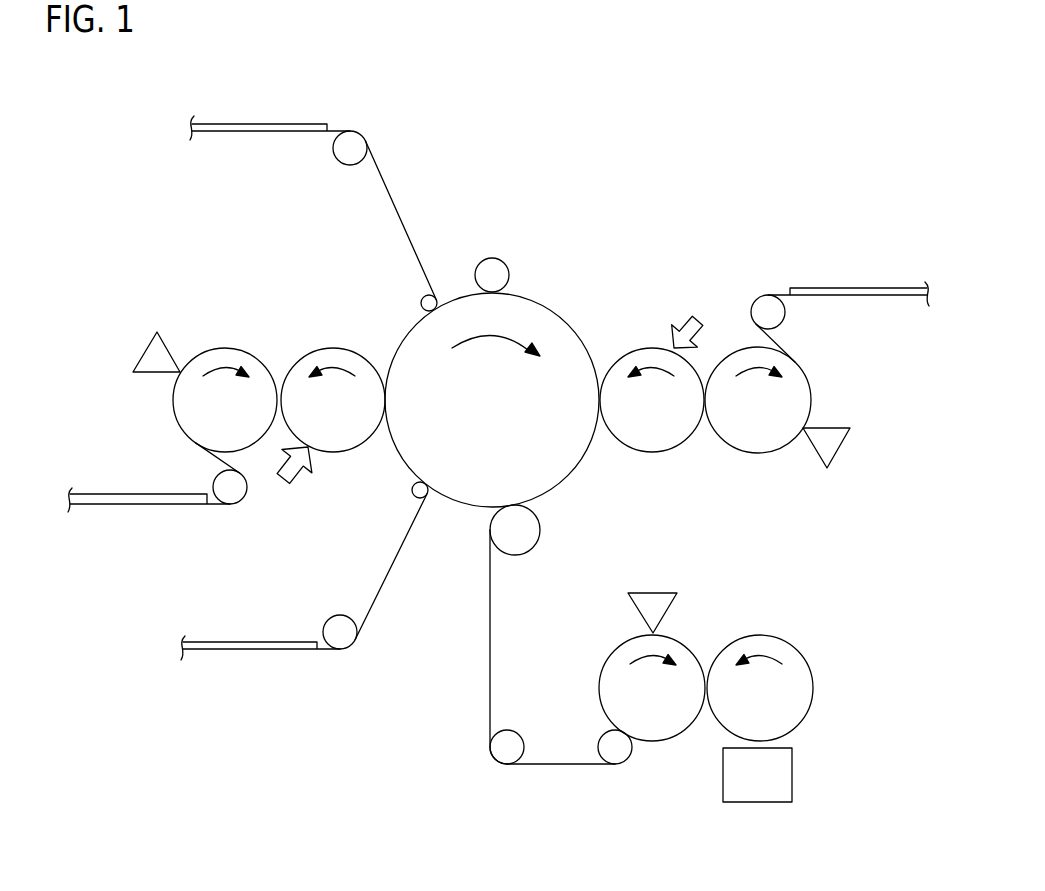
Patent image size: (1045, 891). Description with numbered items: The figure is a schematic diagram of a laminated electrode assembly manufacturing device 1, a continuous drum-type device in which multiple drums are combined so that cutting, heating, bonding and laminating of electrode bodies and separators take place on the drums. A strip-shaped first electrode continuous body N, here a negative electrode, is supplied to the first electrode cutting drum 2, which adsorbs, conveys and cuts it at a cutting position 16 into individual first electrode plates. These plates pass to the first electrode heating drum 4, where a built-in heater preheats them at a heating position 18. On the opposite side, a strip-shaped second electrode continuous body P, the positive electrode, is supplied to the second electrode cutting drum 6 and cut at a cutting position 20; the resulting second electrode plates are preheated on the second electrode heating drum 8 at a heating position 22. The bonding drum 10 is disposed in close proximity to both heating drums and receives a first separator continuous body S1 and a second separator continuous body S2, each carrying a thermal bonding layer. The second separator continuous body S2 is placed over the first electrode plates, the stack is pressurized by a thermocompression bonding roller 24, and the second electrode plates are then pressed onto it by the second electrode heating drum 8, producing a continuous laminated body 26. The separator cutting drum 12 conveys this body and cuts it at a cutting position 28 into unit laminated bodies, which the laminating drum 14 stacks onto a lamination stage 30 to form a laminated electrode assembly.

The laminated electrode assembly manufacturing device 1 is at (527, 868).
The first electrode cutting drum 2 is at (225, 348).
The first electrode heating drum 4 is at (333, 348).
The second electrode cutting drum 6 is at (758, 453).
The second electrode heating drum 8 is at (652, 452).
The bonding drum 10 is at (545, 307).
The separator cutting drum 12 is at (615, 647).
The laminating drum 14 is at (757, 635).
The cutting position 16 is at (180, 346).
The heating position 18 is at (323, 464).
The cutting position 20 is at (805, 449).
The heating position 22 is at (660, 336).
The thermocompression bonding roller 24 is at (492, 258).
The continuous laminated body 26 is at (490, 635).
The cutting position 28 is at (680, 623).
The lamination stage 30 is at (792, 770).
The first separator continuous body S1 is at (228, 641).
The second separator continuous body S2 is at (237, 124).
The first electrode continuous body N is at (118, 493).
The second electrode continuous body P is at (880, 287).